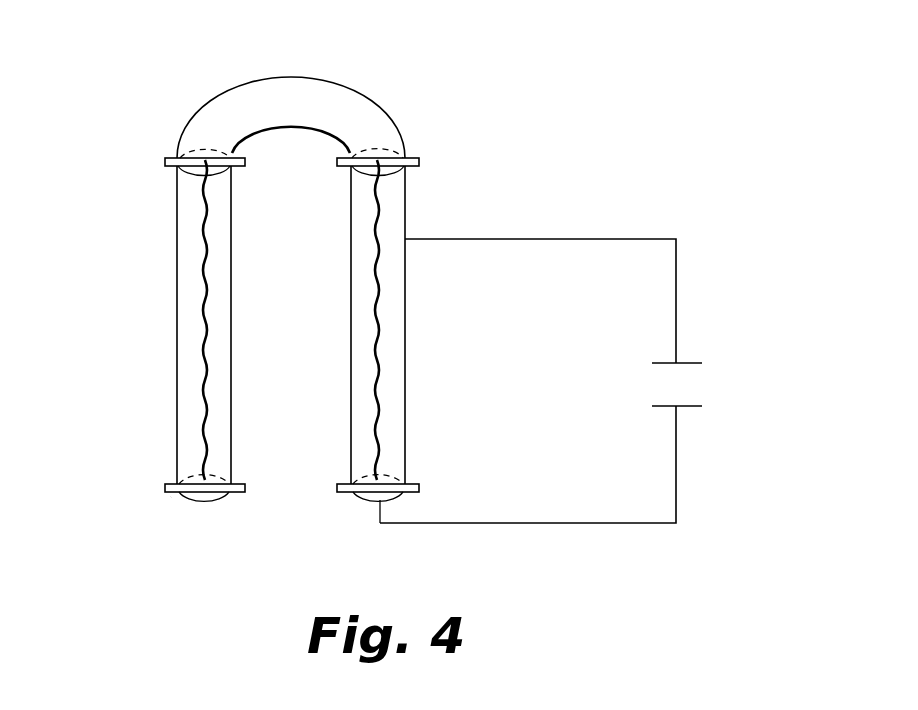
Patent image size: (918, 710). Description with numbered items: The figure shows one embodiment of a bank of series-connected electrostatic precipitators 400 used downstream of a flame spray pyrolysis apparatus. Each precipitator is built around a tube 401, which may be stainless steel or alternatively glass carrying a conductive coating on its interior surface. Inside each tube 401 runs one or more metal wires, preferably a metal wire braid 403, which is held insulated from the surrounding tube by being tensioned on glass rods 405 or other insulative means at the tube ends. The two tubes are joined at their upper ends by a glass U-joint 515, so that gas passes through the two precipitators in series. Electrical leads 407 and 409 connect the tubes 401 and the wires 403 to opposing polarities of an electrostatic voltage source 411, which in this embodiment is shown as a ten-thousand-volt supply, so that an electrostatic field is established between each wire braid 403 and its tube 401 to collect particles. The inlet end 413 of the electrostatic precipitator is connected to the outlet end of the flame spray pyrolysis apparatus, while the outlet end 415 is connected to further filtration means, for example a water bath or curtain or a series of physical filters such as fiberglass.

The electrostatic precipitator 400 is at (163, 365).
The stainless steel tube 401 is at (176, 313).
The metal wire braid 403 is at (178, 233).
The glass rod 405 is at (176, 158).
The electrical lead 407 is at (603, 237).
The electrical lead 409 is at (605, 525).
The electrostatic voltage source 411 is at (708, 379).
The inlet end 413 is at (367, 506).
The outlet end 415 is at (168, 497).
The glass U-joint 515 is at (335, 88).